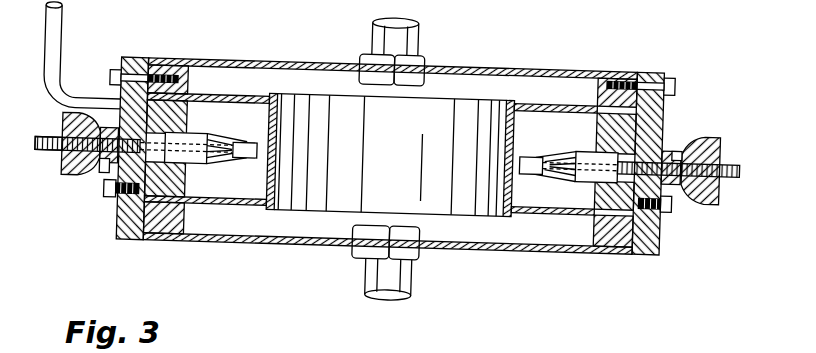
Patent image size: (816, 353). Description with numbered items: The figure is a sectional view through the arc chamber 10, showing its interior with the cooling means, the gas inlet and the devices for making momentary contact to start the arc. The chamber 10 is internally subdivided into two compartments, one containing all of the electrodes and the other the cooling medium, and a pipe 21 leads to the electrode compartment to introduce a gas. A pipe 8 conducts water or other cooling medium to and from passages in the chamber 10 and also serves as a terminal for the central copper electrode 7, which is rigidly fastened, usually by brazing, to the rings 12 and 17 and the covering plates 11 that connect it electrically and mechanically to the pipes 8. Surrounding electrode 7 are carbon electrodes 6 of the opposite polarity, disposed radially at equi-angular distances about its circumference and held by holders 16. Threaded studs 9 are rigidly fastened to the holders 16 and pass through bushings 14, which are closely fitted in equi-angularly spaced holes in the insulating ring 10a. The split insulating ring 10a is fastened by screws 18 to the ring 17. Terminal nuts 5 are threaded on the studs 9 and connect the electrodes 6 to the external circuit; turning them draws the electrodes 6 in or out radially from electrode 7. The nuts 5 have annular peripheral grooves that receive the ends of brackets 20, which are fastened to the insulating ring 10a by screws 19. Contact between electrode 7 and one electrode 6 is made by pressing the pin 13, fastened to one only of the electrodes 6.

The terminal nut 5 is at (60, 180).
The electrode 6 is at (250, 163).
The central electrode 7 is at (268, 122).
The pipe 8 is at (416, 43).
The threaded stud 9 is at (45, 162).
The chamber 10 is at (525, 129).
The insulating ring 10a is at (140, 64).
The covering plate 11 is at (511, 66).
The ring 12 is at (226, 101).
The pin 13 is at (30, 150).
The bushing 14 is at (665, 141).
The electrode holder 16 is at (193, 170).
The ring 17 is at (176, 85).
The screw 18 is at (114, 78).
The screw 19 is at (110, 198).
The bracket 20 is at (102, 179).
The gas pipe 21 is at (58, 35).